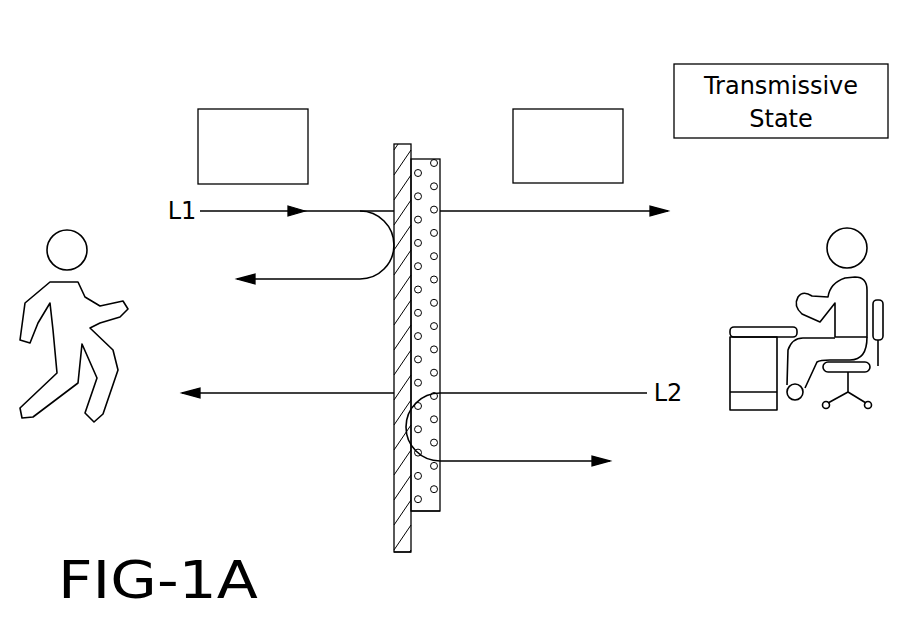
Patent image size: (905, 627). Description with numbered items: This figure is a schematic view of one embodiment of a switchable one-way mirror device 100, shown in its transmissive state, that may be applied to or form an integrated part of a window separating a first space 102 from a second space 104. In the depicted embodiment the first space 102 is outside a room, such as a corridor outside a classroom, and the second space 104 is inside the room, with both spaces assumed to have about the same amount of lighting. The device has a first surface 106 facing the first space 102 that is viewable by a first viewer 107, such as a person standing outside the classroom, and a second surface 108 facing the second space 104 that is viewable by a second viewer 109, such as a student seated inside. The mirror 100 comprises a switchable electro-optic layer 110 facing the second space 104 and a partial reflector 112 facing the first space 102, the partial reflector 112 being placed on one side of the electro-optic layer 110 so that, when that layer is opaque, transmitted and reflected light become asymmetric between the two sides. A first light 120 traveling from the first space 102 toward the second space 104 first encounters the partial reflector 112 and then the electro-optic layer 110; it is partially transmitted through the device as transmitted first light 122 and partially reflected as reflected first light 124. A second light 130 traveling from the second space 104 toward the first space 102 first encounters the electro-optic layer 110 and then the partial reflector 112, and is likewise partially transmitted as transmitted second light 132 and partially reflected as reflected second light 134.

The switchable one-way mirror device 100 is at (402, 128).
The first space 102 is at (257, 109).
The second space 104 is at (572, 109).
The first surface 106 is at (393, 188).
The first viewer 107 is at (60, 250).
The second surface 108 is at (441, 188).
The second viewer 109 is at (840, 250).
The switchable electro-optic layer 110 is at (438, 513).
The partial reflector 112 is at (410, 555).
The first light 120 is at (262, 212).
The transmitted first light 122 is at (524, 212).
The reflected first light 124 is at (302, 280).
The second light 130 is at (524, 394).
The transmitted second light 132 is at (315, 394).
The reflected second light 134 is at (500, 462).